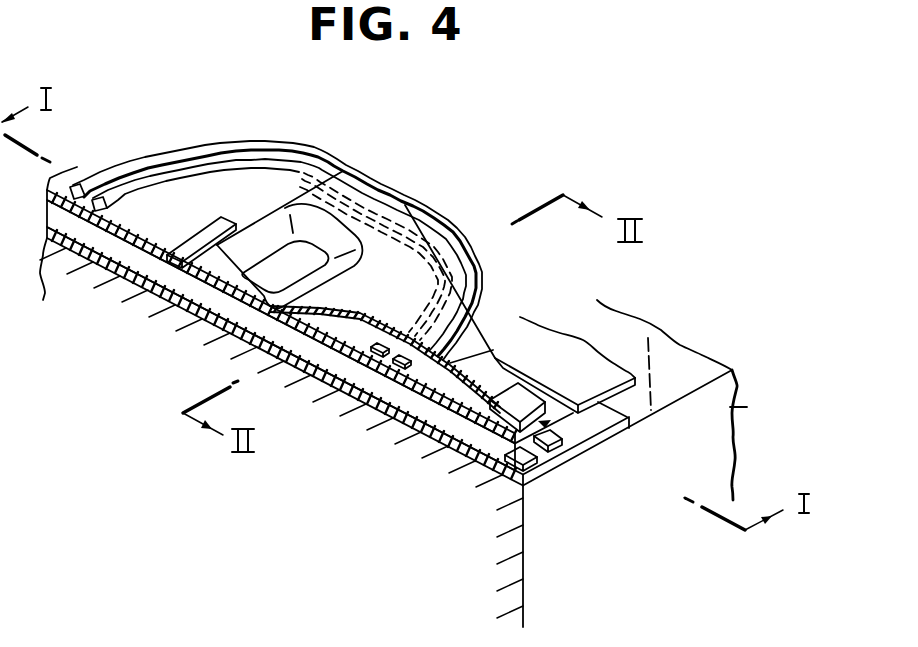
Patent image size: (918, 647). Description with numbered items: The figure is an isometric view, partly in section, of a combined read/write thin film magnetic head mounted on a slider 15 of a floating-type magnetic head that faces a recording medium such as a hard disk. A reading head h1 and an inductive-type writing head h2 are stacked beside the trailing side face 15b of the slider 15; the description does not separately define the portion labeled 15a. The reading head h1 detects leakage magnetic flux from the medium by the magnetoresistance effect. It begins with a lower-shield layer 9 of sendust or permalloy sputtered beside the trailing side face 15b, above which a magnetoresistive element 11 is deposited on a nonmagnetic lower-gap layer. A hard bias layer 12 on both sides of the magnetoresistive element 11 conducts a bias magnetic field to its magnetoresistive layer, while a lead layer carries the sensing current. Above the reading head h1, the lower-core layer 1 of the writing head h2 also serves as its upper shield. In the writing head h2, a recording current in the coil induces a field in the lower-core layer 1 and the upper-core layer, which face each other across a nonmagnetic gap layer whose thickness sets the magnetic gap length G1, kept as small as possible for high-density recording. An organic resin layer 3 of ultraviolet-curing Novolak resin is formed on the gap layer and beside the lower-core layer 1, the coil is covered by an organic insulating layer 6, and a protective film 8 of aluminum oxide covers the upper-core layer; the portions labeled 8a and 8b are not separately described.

The lower-core layer 1 is at (432, 383).
The organic resin layer 3 is at (572, 357).
The insulating layer 6 is at (134, 183).
The protective film 8 is at (350, 325).
The bent end portion of sheet 8a is at (473, 436).
The recess of sheet 8b is at (230, 302).
The lower-shield layer 9 is at (620, 427).
The magnetoresistive element 11 is at (524, 460).
The hard bias layer 12 is at (538, 462).
The slider 15 is at (497, 518).
The lower base portion 15a is at (713, 463).
The trailing side face 15b is at (700, 352).
The magnetic gap length G1 is at (558, 430).
The reading head h1 is at (759, 406).
The inductive-type writing head h2 is at (657, 354).